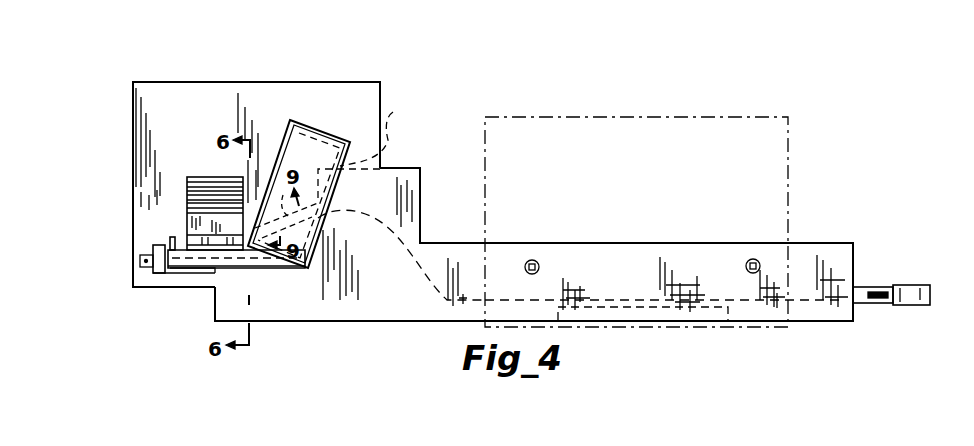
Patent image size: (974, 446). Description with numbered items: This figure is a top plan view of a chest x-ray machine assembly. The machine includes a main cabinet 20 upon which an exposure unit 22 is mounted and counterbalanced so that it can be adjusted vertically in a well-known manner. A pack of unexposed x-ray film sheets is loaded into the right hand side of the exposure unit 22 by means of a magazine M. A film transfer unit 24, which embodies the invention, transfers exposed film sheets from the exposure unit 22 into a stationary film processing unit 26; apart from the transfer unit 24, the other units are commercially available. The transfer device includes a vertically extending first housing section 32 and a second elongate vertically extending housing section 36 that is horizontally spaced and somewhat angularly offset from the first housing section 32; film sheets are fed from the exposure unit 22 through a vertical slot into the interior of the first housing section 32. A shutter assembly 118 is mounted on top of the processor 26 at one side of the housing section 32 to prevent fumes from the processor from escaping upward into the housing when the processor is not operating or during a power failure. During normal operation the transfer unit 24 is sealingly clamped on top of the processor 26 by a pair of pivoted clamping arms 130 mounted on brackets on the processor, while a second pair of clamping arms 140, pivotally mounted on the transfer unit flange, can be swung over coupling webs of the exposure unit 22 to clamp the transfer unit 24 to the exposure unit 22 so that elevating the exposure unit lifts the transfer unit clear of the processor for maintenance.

The main cabinet 20 is at (788, 163).
The exposure unit 22 is at (412, 310).
The film transfer unit 24 is at (350, 151).
The film processing unit 26 is at (285, 81).
The first housing section 32 is at (190, 271).
The second housing section 36 is at (372, 152).
The shutter assembly 118 is at (217, 177).
The clamping arms 130 is at (142, 255).
The second pair of clamping arms 140 is at (170, 240).
The magazine M is at (914, 306).